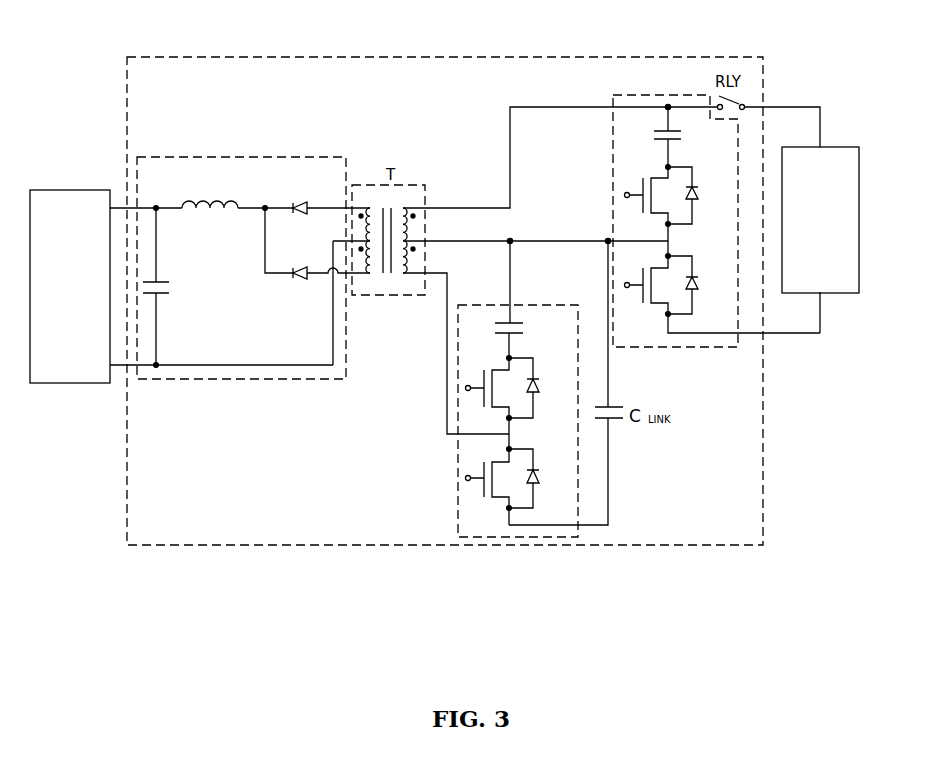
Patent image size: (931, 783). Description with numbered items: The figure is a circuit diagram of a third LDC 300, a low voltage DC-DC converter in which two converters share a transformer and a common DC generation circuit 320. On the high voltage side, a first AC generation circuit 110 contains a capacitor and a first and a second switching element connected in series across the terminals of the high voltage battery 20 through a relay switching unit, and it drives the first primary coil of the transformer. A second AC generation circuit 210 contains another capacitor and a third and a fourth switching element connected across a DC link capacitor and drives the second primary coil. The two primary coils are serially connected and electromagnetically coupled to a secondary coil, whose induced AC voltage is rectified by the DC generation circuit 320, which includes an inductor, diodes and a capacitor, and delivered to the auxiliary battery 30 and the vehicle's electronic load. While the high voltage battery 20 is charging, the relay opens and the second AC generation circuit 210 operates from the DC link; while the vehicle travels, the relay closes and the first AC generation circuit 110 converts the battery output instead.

The third LDC 300 is at (418, 545).
The DC generation circuit 320 is at (250, 157).
The first AC generation circuit 110 is at (670, 95).
The second AC generation circuit 210 is at (517, 537).
The auxiliary battery 30 is at (70, 383).
The high voltage battery 20 is at (839, 147).